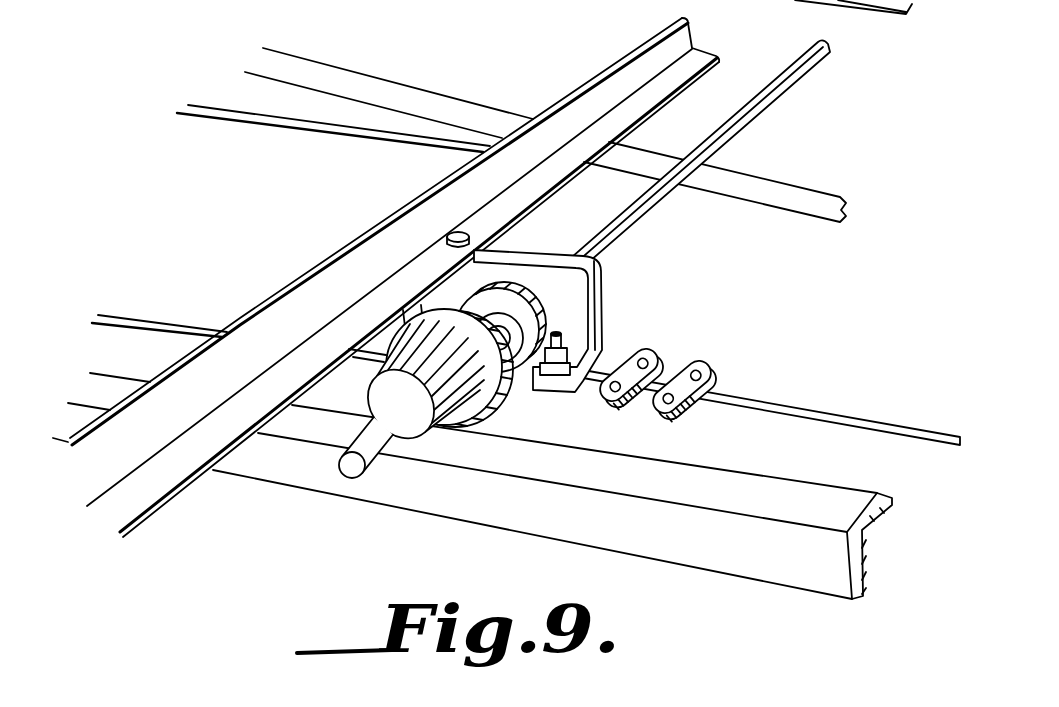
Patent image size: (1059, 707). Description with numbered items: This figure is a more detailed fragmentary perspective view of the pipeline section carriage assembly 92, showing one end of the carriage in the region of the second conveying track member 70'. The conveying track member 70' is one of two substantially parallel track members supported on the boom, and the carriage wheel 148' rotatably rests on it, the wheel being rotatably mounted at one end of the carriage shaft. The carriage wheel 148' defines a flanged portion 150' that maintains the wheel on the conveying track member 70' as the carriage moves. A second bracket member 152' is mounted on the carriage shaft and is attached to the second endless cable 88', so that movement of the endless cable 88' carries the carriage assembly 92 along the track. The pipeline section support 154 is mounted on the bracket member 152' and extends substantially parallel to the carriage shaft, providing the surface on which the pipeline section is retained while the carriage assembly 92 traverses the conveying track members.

The pipeline section carriage assembly 92 is at (456, 257).
The second bracket member 152' is at (560, 321).
The flanged portion 150' is at (537, 363).
The carriage wheel 148' is at (426, 433).
The pipeline section support 154 is at (168, 476).
The second endless cable 88' is at (526, 391).
The second conveying track member 70' is at (552, 523).